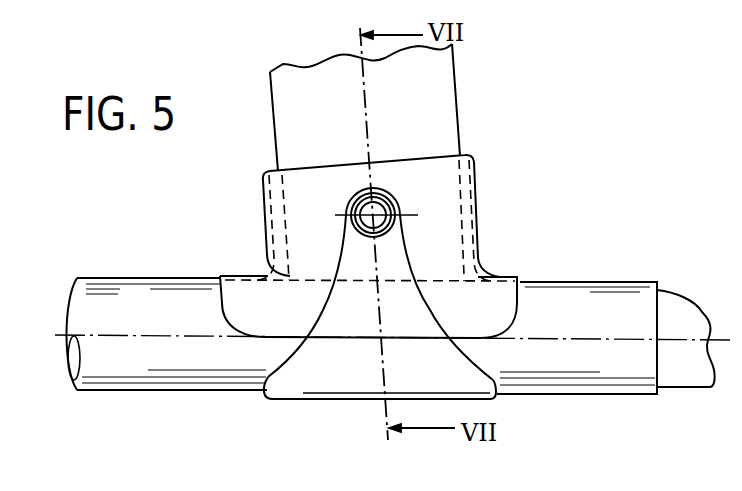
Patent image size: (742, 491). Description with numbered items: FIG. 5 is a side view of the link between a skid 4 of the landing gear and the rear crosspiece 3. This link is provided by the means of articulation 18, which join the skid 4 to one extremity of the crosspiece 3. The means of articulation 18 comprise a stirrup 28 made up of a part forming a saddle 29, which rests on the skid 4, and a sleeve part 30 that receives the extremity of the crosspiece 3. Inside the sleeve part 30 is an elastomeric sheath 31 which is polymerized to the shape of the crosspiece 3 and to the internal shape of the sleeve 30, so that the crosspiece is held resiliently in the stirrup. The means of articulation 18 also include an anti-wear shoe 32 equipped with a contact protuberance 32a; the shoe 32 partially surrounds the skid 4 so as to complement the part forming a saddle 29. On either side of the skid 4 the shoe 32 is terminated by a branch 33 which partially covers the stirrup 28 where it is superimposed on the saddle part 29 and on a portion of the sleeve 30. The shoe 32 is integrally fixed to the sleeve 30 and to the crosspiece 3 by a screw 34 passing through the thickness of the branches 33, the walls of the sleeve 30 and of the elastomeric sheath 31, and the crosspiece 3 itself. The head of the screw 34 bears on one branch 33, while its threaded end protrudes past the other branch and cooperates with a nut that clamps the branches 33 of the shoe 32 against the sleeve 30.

The crosspiece 3 is at (435, 87).
The skid 4 is at (137, 303).
The means of articulation 18 is at (398, 243).
The stirrup 28 is at (258, 216).
The part forming a saddle 29 is at (485, 300).
The sleeve part 30 is at (475, 167).
The elastomeric sheath 31 is at (475, 198).
The anti-wear shoe 32 is at (350, 363).
The contact protuberance 32a is at (301, 398).
The branch 33 is at (360, 270).
The screw 34 is at (360, 193).